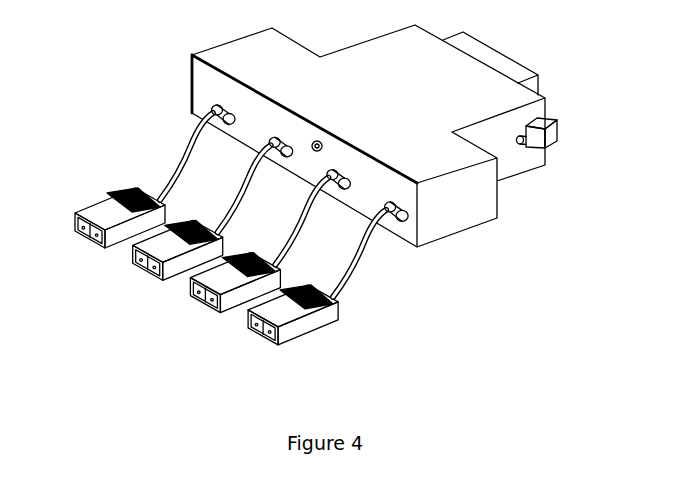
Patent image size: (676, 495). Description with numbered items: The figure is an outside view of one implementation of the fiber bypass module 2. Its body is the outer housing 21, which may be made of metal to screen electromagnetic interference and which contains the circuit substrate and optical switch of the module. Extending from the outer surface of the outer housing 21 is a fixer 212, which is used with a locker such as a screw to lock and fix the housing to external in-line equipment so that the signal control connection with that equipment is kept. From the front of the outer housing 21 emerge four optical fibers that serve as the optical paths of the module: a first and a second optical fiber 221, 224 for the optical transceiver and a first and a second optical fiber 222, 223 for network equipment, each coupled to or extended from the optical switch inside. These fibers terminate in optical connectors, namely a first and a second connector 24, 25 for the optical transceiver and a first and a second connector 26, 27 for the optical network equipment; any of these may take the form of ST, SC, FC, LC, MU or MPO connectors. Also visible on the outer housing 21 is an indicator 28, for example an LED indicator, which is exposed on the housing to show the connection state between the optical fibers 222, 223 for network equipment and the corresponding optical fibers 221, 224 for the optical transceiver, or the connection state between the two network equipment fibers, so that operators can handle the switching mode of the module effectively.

The fiber bypass module 2 is at (488, 320).
The outer housing 21 is at (460, 150).
The fixer 212 is at (558, 137).
The first optical fiber for optical transceiver 221 is at (178, 172).
The first optical fiber for network equipment 222 is at (228, 208).
The second optical fiber for network equipment 223 is at (283, 238).
The second optical fiber for optical transceiver 224 is at (341, 276).
The first connector for optical transceiver 24 is at (75, 214).
The second connector for optical transceiver 25 is at (248, 317).
The first connector for optical network equipment 26 is at (133, 251).
The second connector for optical network equipment 27 is at (190, 288).
The indicator 28 is at (312, 152).